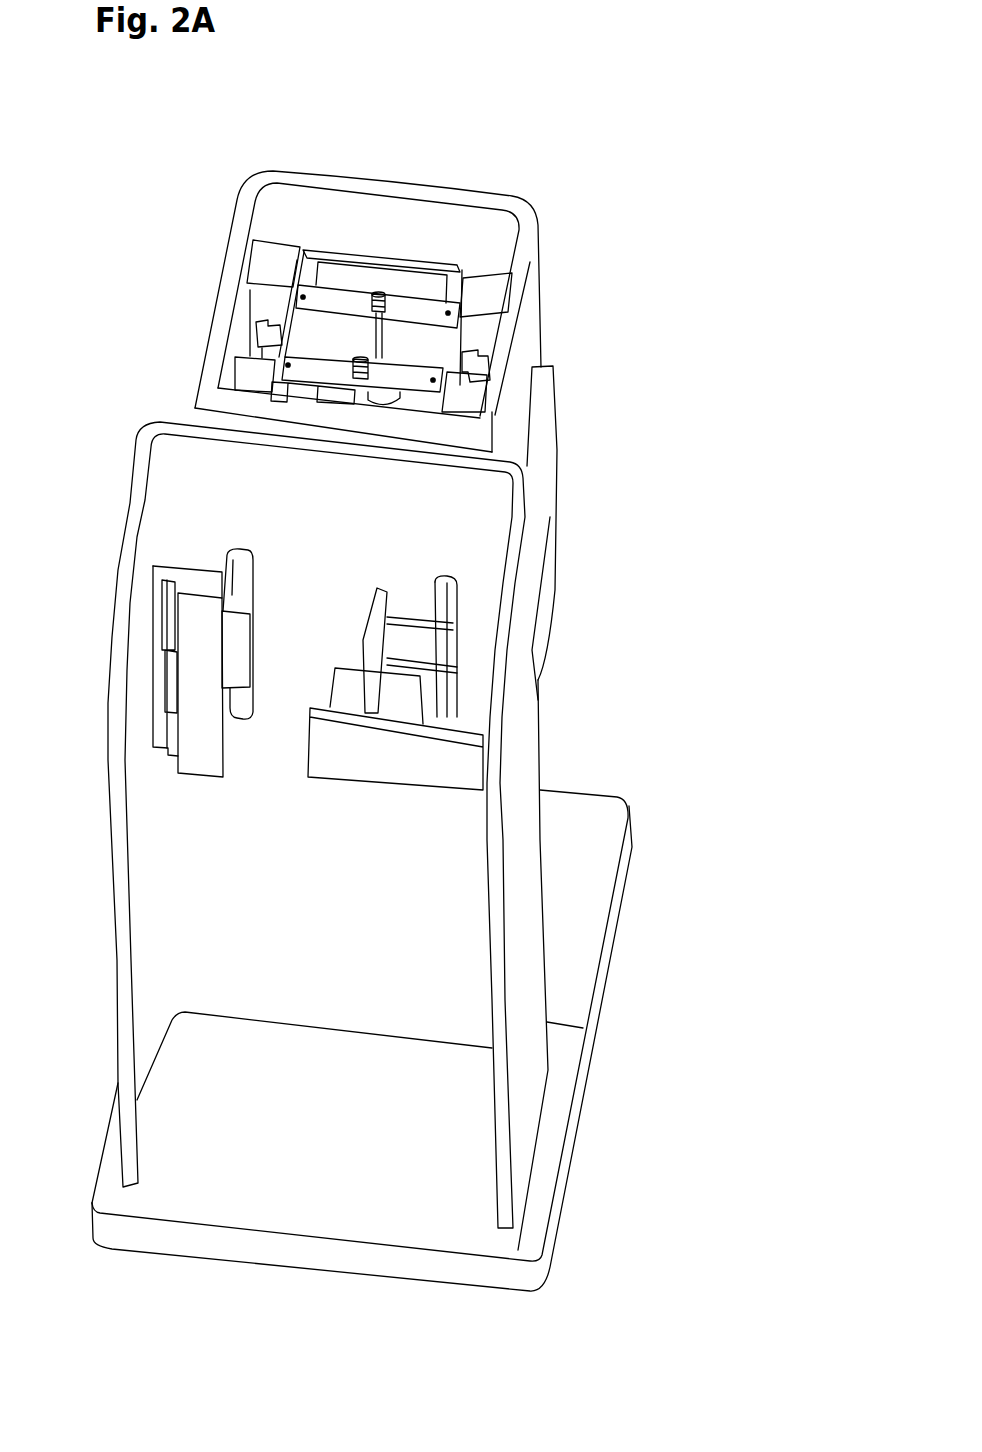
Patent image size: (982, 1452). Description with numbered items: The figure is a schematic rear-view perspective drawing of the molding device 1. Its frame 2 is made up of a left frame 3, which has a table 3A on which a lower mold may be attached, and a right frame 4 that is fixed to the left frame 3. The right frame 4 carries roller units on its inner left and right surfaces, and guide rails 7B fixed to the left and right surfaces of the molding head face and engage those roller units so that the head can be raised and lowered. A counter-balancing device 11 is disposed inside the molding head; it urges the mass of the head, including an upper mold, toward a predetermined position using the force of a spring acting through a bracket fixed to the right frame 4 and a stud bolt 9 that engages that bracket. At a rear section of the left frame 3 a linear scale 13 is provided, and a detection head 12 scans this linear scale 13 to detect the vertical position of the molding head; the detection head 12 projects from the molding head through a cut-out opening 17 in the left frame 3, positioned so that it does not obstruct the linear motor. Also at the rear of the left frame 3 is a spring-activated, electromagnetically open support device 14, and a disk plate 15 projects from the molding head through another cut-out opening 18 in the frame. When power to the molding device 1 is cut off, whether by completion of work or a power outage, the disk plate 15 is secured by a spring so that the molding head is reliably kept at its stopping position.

The molding device 1 is at (168, 150).
The frame 2 is at (67, 377).
The left frame 3 is at (137, 457).
The table 3A is at (587, 908).
The right frame 4 is at (193, 395).
The guide rails 7B is at (257, 347).
The stud bolt 9 is at (375, 293).
The counter-balancing device 11 is at (393, 337).
The detection head 12 is at (233, 646).
The linear scale 13 is at (195, 725).
The support device 14 is at (400, 694).
The disk plate 15 is at (385, 647).
The cut-out opening 17 is at (230, 562).
The cut-out opening 18 is at (437, 592).